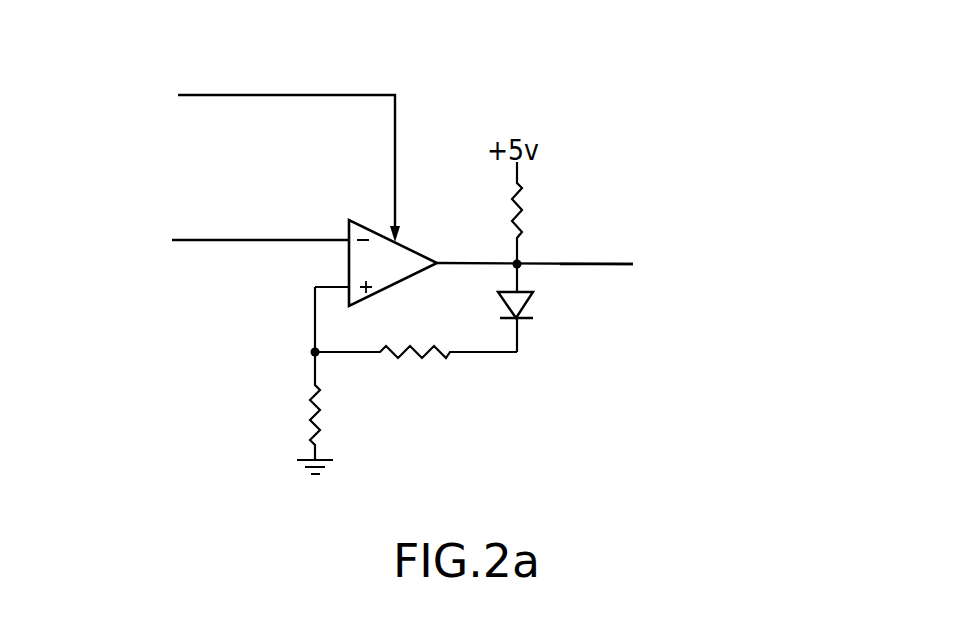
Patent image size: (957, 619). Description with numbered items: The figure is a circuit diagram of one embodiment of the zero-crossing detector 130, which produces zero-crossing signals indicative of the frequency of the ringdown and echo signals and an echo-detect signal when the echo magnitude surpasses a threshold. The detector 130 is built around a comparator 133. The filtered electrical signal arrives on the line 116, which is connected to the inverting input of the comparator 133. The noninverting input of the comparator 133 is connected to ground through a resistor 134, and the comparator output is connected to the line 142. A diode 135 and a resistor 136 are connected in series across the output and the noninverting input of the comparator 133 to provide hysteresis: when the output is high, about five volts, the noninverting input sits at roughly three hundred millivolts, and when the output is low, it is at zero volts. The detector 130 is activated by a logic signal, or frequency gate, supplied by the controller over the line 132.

The zero-crossing detector 130 is at (140, 98).
The line 132 is at (290, 78).
The line 116 is at (288, 238).
The comparator 133 is at (414, 251).
The line 142 is at (594, 265).
The diode 135 is at (524, 302).
The resistor 136 is at (414, 355).
The resistor 134 is at (320, 418).